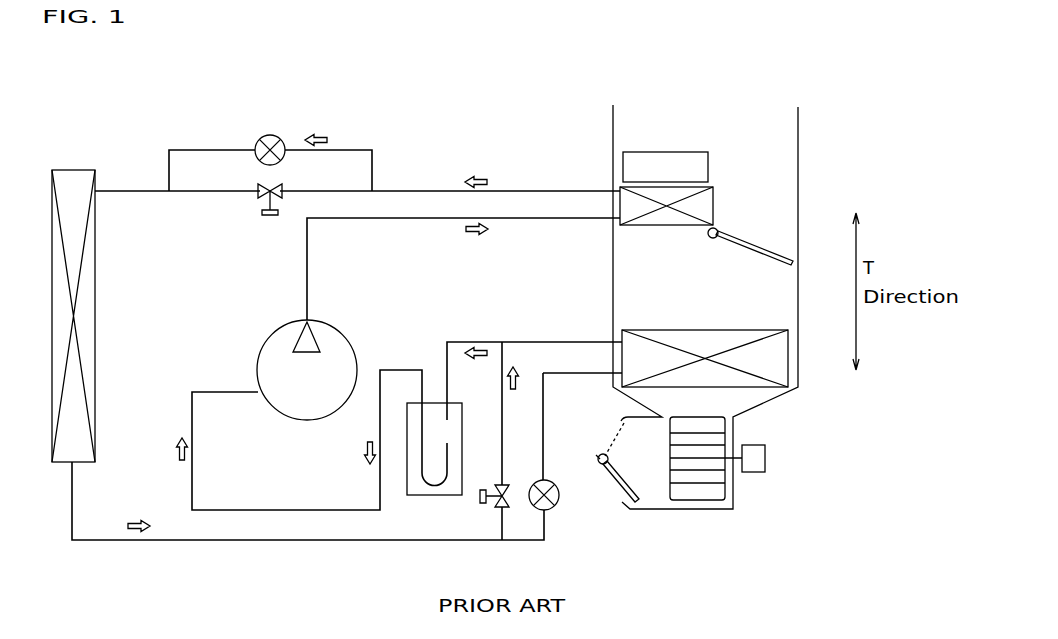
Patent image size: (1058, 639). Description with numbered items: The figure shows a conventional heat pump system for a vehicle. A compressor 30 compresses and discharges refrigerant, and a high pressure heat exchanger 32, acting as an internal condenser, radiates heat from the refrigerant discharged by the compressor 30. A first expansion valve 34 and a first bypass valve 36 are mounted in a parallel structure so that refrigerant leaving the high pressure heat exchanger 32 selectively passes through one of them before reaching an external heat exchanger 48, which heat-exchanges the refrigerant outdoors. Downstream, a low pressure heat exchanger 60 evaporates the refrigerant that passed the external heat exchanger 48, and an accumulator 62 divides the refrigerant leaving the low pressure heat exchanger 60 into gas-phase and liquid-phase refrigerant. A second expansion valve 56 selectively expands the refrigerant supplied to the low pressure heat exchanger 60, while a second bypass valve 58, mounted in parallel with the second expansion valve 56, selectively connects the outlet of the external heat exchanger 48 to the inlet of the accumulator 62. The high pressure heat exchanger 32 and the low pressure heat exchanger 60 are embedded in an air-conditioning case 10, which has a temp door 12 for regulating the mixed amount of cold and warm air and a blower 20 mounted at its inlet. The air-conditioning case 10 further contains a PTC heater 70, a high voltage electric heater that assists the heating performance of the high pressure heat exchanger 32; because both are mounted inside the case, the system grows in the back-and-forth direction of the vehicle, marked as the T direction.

The air-conditioning case 10 is at (800, 137).
The temp door 12 is at (758, 246).
The blower 20 is at (727, 440).
The compressor 30 is at (275, 325).
The high pressure heat exchanger 32 is at (667, 225).
The first expansion valve 34 is at (270, 135).
The first bypass valve 36 is at (270, 218).
The external heat exchanger 48 is at (73, 168).
The second expansion valve 56 is at (555, 512).
The second bypass valve 58 is at (480, 503).
The low pressure heat exchanger 60 is at (772, 358).
The accumulator 62 is at (435, 400).
The PTC heater 70 is at (620, 167).